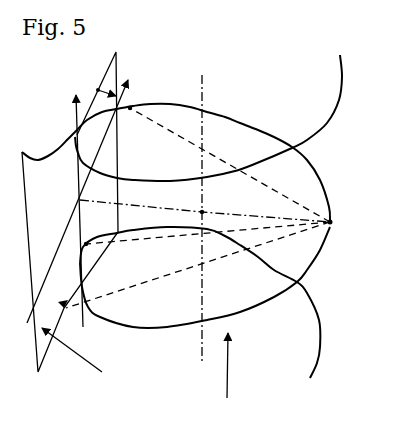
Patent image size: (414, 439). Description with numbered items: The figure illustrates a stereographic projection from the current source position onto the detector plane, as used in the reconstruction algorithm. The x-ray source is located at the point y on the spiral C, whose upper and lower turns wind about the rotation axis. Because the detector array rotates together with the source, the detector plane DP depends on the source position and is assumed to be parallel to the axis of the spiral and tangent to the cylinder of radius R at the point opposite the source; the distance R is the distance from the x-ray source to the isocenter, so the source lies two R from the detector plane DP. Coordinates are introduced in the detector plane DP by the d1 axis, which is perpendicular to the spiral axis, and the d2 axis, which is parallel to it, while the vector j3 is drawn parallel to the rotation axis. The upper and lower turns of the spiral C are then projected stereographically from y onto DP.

The spiral (source trajectory) C is at (182, 212).
The detector plane DP is at (98, 236).
The d1-axis d1 is at (91, 199).
The d2-axis d2 is at (65, 204).
The rotation axis is at (232, 213).
The distance from x-ray source to isocenter R is at (205, 205).
The source position y is at (222, 207).
The unit vector j3 is at (237, 365).